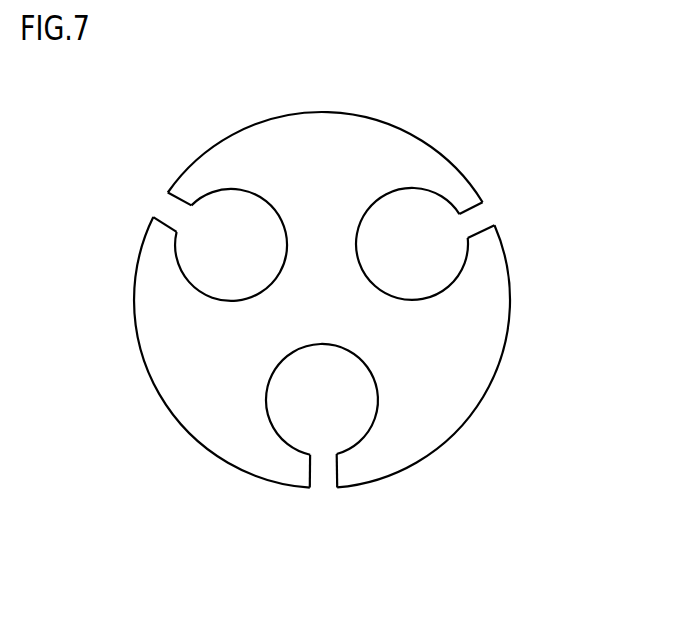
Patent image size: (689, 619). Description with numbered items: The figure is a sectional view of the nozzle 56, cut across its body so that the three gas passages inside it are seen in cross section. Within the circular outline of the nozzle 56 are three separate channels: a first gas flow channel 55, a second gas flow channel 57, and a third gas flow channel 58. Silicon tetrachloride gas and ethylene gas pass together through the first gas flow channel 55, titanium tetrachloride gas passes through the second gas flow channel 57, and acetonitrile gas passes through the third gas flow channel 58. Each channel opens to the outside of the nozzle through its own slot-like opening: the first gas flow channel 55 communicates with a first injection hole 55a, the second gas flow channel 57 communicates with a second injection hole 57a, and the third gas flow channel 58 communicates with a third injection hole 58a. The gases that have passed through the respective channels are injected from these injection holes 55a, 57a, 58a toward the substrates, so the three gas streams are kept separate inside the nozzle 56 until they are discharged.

The first gas flow channel 55 is at (185, 278).
The first injection hole 55a is at (162, 203).
The nozzle 56 is at (463, 172).
The second gas flow channel 57 is at (460, 278).
The second injection hole 57a is at (477, 219).
The third gas flow channel 58 is at (377, 420).
The third injection hole 58a is at (322, 470).